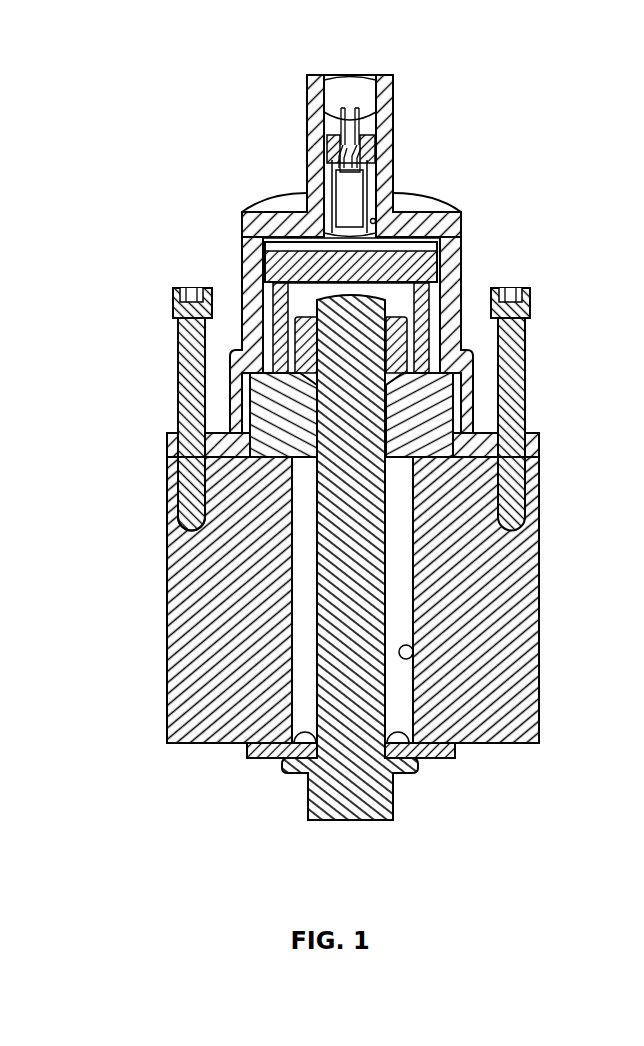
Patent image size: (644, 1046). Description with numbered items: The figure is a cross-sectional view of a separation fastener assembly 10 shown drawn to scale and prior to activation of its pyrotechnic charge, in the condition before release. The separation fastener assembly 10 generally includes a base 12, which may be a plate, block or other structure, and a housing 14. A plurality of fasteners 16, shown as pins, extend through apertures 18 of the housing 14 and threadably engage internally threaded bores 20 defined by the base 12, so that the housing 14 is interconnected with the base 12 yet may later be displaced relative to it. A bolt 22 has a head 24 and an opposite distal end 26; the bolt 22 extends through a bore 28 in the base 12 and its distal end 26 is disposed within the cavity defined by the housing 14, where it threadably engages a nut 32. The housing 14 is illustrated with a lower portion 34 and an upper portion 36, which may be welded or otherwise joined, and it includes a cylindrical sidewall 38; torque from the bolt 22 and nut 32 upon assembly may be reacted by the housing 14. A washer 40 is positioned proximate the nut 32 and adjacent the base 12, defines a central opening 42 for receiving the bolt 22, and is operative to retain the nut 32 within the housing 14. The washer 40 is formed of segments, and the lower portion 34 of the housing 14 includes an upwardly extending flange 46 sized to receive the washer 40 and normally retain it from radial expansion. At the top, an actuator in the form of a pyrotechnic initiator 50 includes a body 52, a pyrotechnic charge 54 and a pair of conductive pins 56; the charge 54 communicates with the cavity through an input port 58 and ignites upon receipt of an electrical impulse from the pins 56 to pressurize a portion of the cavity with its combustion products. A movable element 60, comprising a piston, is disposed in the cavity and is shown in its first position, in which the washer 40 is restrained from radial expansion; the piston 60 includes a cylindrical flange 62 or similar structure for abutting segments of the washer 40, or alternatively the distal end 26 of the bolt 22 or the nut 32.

The separation fastener assembly 10 is at (163, 81).
The base 12 is at (164, 714).
The housing 14 is at (257, 196).
The fasteners 16 is at (178, 366).
The apertures 18 is at (176, 434).
The internally threaded bores 20 is at (542, 492).
The bolt 22 is at (375, 822).
The head 24 is at (369, 820).
The distal end 26 is at (415, 322).
The bore 28 is at (412, 657).
The nut 32 is at (305, 336).
The lower portion 34 is at (542, 431).
The upper portion 36 is at (392, 168).
The cylindrical sidewall 38 is at (462, 243).
The washer 40 is at (204, 460).
The central opening 42 is at (436, 408).
The upwardly extending flange 46 is at (233, 364).
The initiator 50 is at (375, 138).
The body 52 is at (336, 148).
The pyrotechnic charge 54 is at (358, 203).
The conductive pins 56 is at (312, 97).
The input port 58 is at (377, 220).
The movable element 60 is at (258, 249).
The cylindrical flange 62 is at (441, 312).